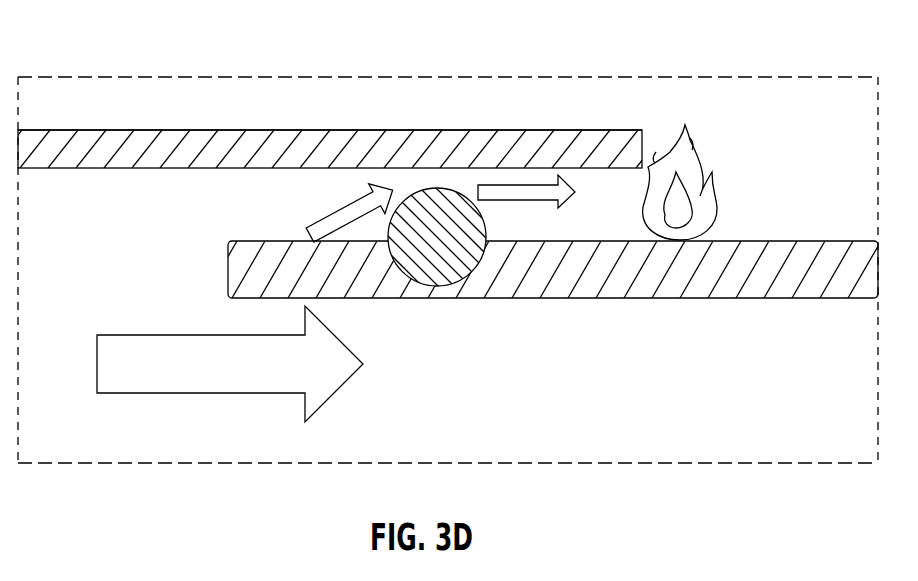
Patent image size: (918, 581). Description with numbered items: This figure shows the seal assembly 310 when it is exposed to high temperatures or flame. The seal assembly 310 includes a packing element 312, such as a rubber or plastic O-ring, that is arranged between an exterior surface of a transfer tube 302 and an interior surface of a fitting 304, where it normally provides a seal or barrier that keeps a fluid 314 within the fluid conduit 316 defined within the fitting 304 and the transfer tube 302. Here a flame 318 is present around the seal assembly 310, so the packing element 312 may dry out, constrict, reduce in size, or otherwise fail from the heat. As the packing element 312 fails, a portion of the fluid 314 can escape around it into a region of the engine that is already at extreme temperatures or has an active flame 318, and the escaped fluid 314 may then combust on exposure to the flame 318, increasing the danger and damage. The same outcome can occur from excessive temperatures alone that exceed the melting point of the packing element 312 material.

The transfer tube 302 is at (778, 241).
The fitting 304 is at (297, 153).
The seal assembly 310 is at (474, 124).
The packing element 312 is at (437, 270).
The fluid 314 is at (248, 385).
The fluid conduit 316 is at (711, 434).
The flame 318 is at (670, 137).